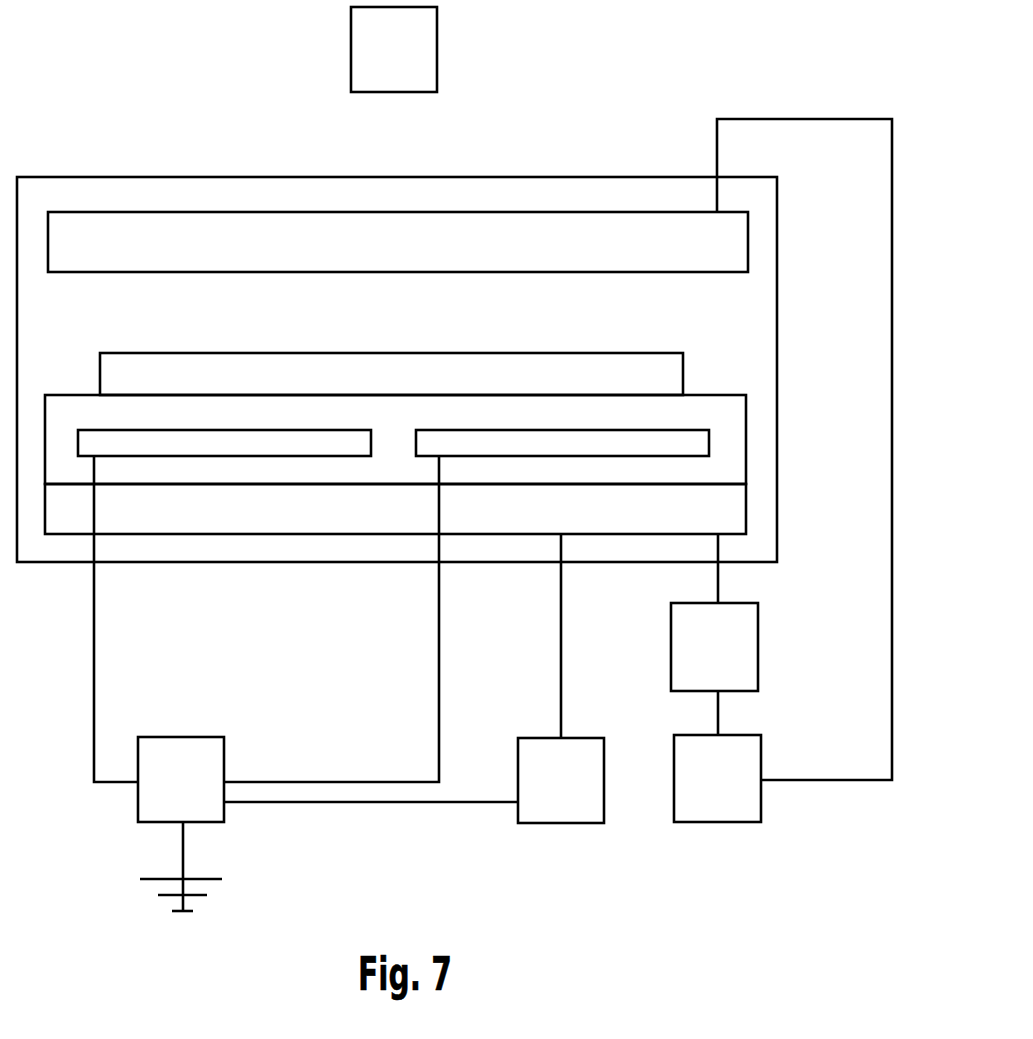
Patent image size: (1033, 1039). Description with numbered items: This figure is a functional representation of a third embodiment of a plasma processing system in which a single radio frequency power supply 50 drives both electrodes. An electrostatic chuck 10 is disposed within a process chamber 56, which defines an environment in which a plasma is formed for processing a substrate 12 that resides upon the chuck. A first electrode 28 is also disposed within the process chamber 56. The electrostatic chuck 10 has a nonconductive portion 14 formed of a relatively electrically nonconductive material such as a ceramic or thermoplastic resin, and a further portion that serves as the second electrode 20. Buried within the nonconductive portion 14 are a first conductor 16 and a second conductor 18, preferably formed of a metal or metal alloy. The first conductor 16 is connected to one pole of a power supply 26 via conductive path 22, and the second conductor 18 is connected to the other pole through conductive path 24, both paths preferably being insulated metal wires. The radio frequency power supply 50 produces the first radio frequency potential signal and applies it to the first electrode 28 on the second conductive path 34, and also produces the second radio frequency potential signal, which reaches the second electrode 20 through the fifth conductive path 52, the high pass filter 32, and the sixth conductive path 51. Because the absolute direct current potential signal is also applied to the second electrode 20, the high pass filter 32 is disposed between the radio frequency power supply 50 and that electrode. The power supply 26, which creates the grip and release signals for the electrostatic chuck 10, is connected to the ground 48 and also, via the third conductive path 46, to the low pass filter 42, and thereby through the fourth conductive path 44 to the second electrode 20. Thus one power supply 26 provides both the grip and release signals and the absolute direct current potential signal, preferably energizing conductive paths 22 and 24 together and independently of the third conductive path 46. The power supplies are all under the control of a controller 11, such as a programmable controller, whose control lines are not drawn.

The electrostatic chuck 10 is at (443, 464).
The controller 11 is at (394, 49).
The substrate 12 is at (391, 374).
The nonconductive portion 14 is at (395, 439).
The first conductor 16 is at (224, 443).
The second conductor 18 is at (562, 443).
The second electrode 20 is at (395, 509).
The conductive path 22 is at (103, 619).
The conductive path 24 is at (331, 619).
The power supply 26 is at (181, 779).
The first electrode 28 is at (398, 242).
The high pass filter 32 is at (714, 647).
The second conductive path 34 is at (804, 449).
The low pass filter 42 is at (561, 780).
The fourth conductive path 44 is at (546, 636).
The third conductive path 46 is at (371, 790).
The ground 48 is at (165, 867).
The radio frequency power supply 50 is at (717, 778).
The sixth conductive path 51 is at (733, 568).
The fifth conductive path 52 is at (733, 713).
The process chamber 56 is at (812, 362).